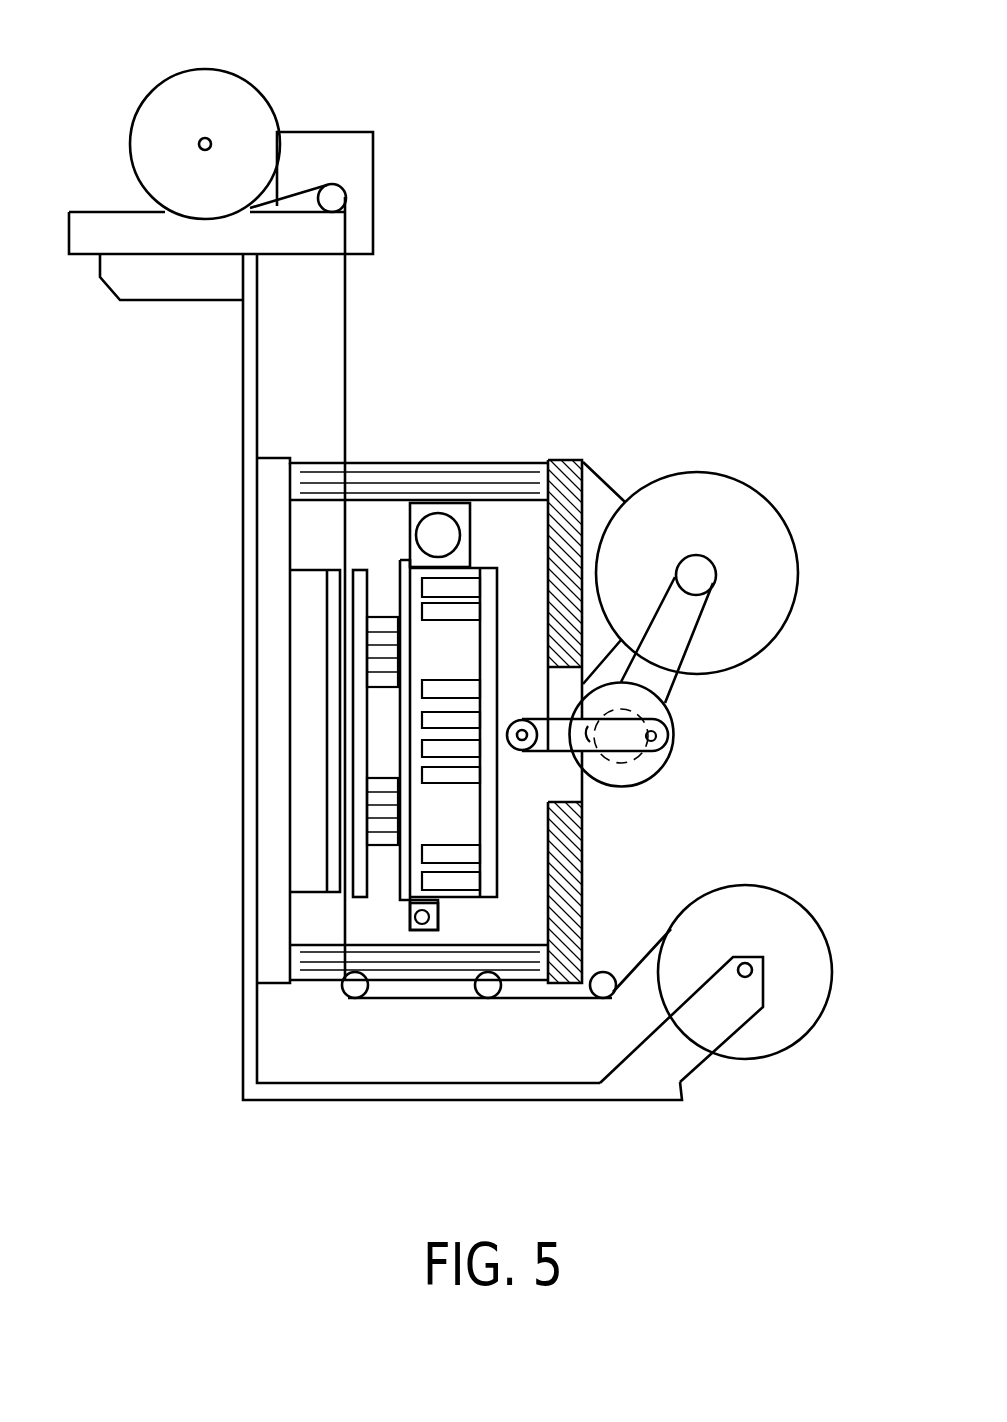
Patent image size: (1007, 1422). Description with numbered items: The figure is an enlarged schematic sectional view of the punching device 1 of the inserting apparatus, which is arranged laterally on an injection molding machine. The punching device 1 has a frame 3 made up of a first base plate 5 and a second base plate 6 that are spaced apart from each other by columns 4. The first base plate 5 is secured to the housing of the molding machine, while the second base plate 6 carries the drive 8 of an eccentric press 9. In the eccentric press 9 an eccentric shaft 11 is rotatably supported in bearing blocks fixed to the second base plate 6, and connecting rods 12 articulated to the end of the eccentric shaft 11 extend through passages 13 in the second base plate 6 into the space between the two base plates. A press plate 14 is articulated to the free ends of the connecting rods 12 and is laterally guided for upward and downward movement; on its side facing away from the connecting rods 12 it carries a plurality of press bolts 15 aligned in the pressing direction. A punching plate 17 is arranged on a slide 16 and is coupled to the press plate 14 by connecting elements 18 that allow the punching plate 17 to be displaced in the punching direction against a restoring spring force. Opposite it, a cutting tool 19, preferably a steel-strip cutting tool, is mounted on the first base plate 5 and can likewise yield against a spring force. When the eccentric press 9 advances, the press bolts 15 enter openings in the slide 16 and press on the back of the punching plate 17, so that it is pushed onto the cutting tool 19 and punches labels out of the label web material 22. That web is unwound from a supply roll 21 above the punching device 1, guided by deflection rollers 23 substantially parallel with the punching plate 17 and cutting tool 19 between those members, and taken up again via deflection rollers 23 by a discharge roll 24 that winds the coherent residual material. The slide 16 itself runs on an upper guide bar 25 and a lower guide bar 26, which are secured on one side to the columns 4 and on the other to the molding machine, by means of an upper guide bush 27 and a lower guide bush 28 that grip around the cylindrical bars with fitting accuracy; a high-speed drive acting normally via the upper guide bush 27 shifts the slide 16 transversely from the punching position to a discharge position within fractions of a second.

The punching device 1 is at (748, 733).
The frame 3 is at (512, 457).
The columns 4 is at (447, 475).
The first base plate 5 is at (307, 882).
The second base plate 6 is at (583, 883).
The drive 8 is at (745, 562).
The eccentric press 9 is at (677, 722).
The eccentric shaft 11 is at (637, 758).
The connecting rods 12 is at (655, 780).
The passages 13 is at (562, 767).
The press plate 14 is at (487, 653).
The press bolts 15 is at (460, 883).
The slide 16 is at (403, 873).
The punching plate 17 is at (358, 592).
The connecting elements 18 is at (377, 672).
The cutting tool 19 is at (307, 725).
The supply roll 21 is at (278, 86).
The label web material 22 is at (350, 318).
The deflection rollers 23 is at (338, 203).
The discharge roll 24 is at (803, 1047).
The upper guide bar 25 is at (445, 523).
The lower guide bar 26 is at (428, 932).
The upper guide bush 27 is at (420, 520).
The lower guide bush 28 is at (413, 932).